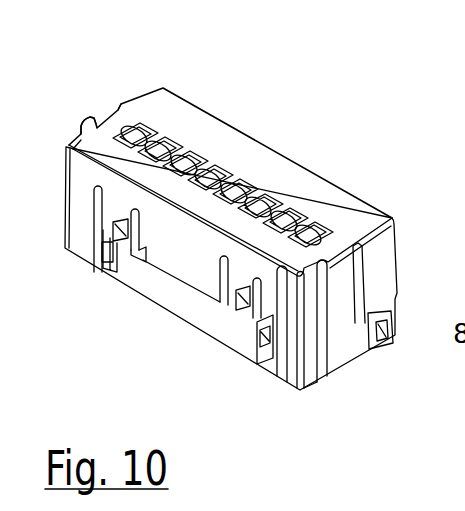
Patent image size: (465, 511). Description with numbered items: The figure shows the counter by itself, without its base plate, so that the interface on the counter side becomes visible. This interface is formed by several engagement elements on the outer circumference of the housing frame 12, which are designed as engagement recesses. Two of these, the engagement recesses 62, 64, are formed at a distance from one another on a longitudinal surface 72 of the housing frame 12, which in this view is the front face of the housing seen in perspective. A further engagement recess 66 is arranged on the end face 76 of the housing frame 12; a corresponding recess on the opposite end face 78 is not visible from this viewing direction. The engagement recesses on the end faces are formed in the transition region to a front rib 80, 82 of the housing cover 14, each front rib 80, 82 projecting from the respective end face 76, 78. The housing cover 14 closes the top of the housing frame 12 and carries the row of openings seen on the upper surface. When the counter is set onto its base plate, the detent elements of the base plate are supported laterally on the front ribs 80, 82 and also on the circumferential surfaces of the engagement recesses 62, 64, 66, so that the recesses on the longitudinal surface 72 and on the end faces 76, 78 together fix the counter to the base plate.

The housing frame 12 is at (183, 297).
The housing cover 14 is at (313, 193).
The engagement recess 62 is at (107, 275).
The engagement recess 64 is at (265, 343).
The engagement recess 66 is at (371, 350).
The longitudinal surface 72 is at (150, 278).
The end face 76 is at (380, 275).
The end face 78 is at (137, 103).
The front rib 80 is at (337, 353).
The front rib 82 is at (93, 119).